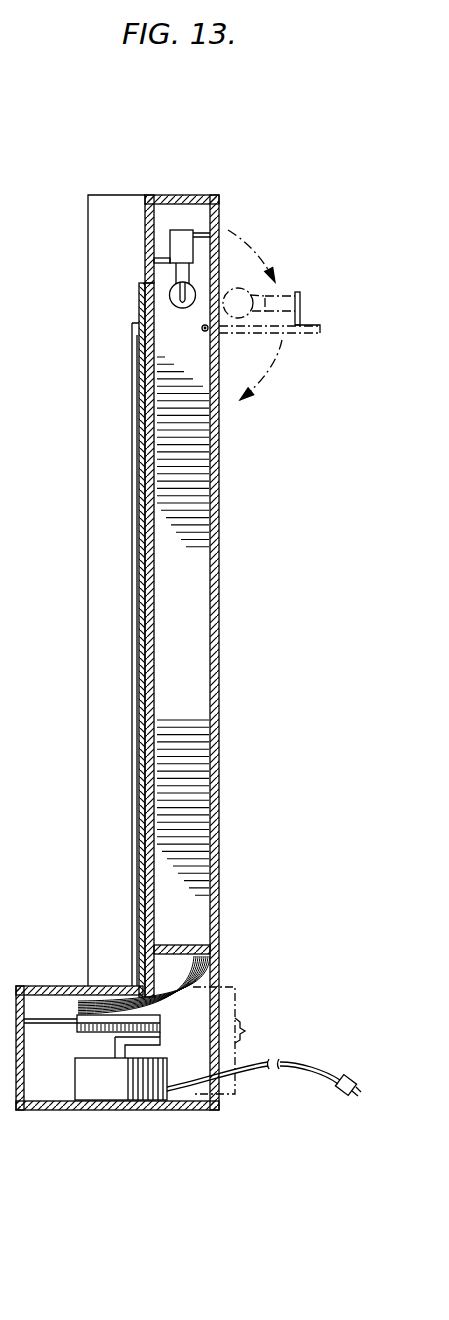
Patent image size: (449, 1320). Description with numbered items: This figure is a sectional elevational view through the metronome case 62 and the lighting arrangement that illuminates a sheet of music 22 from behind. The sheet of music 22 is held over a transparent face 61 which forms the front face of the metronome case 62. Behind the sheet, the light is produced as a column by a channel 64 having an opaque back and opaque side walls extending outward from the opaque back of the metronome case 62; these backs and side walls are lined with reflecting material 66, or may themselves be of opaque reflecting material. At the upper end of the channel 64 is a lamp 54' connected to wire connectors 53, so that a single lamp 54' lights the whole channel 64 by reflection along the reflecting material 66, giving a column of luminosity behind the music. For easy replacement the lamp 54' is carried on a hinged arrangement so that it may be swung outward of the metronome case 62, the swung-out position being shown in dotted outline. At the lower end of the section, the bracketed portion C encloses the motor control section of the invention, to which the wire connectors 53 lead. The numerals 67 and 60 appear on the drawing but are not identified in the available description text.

The lamp 54' is at (122, 269).
The panel 67 is at (133, 503).
The lamp housing assembly 60 is at (232, 459).
The channel 64 is at (187, 512).
The reflecting material 66 is at (192, 579).
The transparent face 61 is at (147, 625).
The metronome case 62 is at (219, 662).
The sheet of music 22 is at (145, 708).
The wire connectors 53 is at (197, 970).
The portion C (motor control section) C is at (192, 1043).